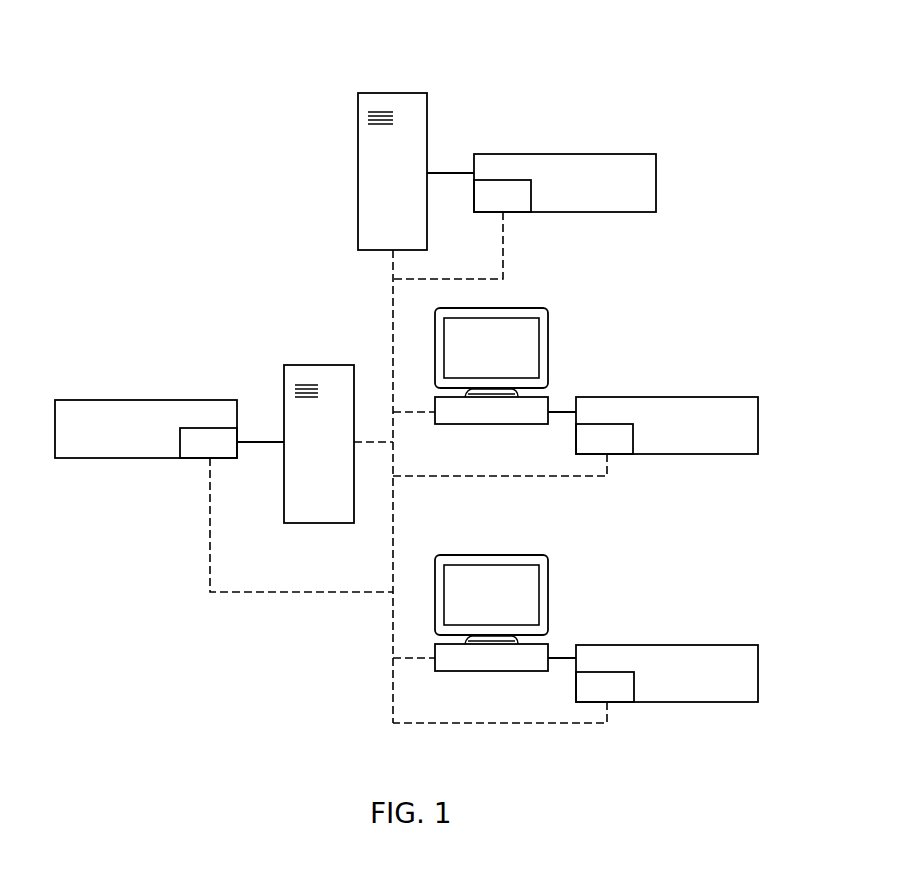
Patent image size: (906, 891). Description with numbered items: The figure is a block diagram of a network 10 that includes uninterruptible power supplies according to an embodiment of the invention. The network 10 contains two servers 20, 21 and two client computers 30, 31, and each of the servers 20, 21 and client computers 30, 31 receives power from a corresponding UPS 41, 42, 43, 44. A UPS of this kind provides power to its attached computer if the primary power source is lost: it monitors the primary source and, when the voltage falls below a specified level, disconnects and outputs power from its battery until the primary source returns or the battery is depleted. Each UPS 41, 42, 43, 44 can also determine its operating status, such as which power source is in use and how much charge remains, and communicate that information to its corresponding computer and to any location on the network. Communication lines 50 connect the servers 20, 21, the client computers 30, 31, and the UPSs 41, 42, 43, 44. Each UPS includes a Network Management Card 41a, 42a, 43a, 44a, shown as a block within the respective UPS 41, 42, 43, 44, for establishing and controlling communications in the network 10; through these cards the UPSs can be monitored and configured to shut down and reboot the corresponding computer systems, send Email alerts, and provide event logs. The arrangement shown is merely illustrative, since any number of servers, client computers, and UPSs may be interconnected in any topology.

The network 10 is at (646, 62).
The server 20 is at (377, 93).
The server 21 is at (303, 365).
The client computer 30 is at (507, 308).
The client computer 31 is at (491, 598).
The uninterruptible power supply 41 is at (585, 200).
The Network Management Card 41a is at (518, 212).
The uninterruptible power supply 42 is at (166, 433).
The Network Management Card 42a is at (220, 459).
The uninterruptible power supply 43 is at (667, 428).
The Network Management Card 43a is at (619, 455).
The uninterruptible power supply 44 is at (667, 675).
The Network Management Card 44a is at (618, 703).
The communication lines 50 is at (392, 332).